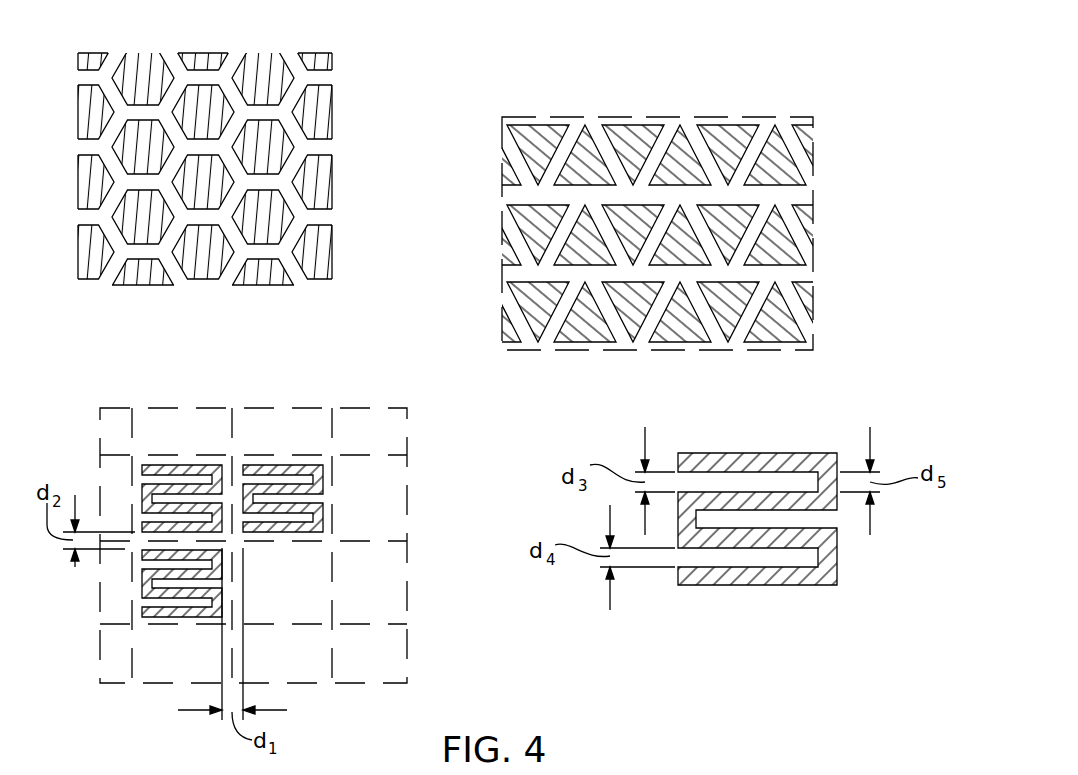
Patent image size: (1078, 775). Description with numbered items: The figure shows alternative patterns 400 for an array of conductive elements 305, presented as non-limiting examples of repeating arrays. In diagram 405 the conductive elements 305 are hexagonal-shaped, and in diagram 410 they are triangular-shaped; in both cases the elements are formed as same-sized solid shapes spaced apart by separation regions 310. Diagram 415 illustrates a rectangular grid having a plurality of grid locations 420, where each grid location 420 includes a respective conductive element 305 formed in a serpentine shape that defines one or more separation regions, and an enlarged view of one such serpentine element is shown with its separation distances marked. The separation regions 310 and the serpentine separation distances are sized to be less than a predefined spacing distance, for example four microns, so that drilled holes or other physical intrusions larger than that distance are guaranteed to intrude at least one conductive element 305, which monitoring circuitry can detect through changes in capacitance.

The conductive elements 305 is at (280, 203).
The separation regions 310 is at (226, 282).
The alternative patterns 400 is at (707, 182).
The diagram 405 is at (332, 72).
The diagram 410 is at (815, 143).
The diagram 415 is at (266, 538).
The grid locations 420 is at (297, 543).